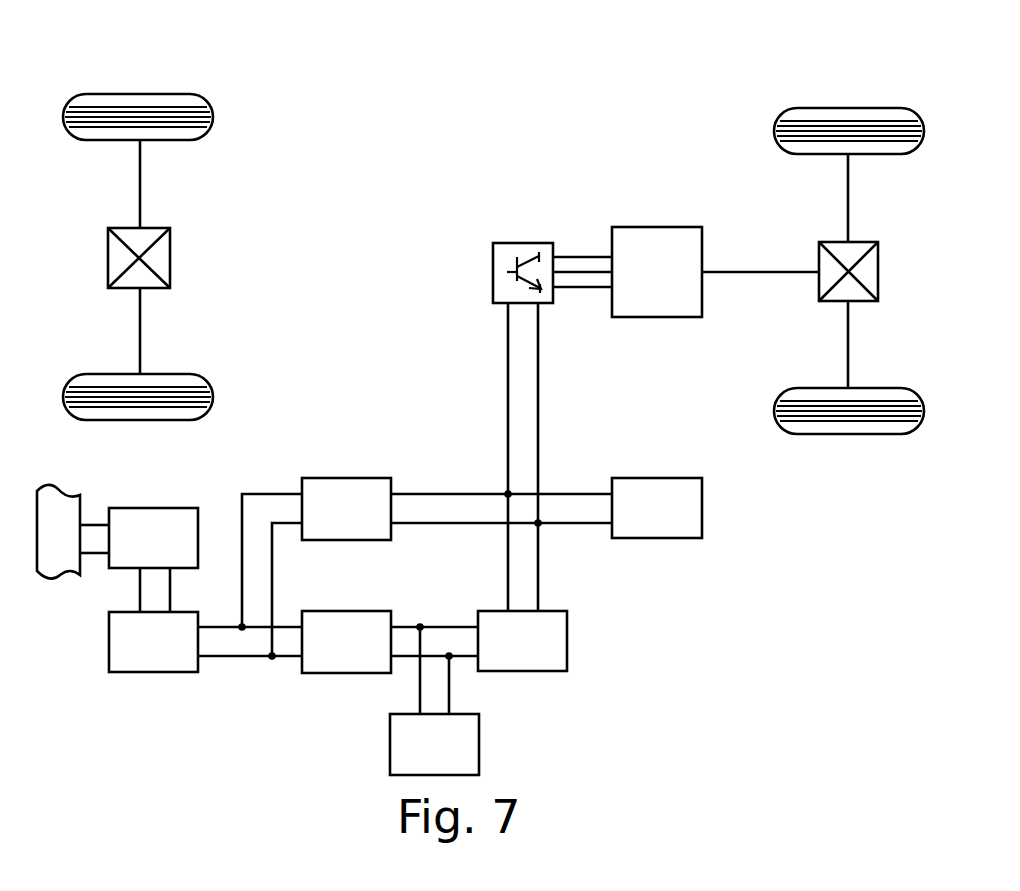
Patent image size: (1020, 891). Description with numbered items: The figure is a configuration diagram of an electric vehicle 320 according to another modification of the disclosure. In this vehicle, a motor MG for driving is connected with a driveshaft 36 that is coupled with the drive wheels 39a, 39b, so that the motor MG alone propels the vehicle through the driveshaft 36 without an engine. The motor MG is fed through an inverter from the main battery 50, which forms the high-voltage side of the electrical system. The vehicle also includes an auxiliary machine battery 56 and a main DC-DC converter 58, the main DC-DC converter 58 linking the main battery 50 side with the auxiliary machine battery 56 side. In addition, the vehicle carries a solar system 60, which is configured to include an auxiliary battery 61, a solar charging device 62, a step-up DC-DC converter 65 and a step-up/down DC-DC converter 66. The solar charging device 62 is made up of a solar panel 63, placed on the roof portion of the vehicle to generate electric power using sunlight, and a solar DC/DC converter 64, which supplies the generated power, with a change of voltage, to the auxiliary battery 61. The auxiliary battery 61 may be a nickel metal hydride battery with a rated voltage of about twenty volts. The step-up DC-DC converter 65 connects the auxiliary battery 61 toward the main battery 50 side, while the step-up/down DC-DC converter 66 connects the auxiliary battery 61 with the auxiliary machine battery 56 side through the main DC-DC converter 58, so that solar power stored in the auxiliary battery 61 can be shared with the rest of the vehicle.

The electric vehicle 320 is at (663, 80).
The drive wheel 39a is at (849, 108).
The drive wheel 39b is at (848, 434).
The driveshaft 36 is at (789, 271).
The motor MG is at (657, 227).
The main battery 50 is at (663, 478).
The main DC-DC converter 58 is at (567, 650).
The auxiliary machine battery 56 is at (479, 748).
The solar system 60 is at (316, 418).
The step-up DC-DC converter 65 is at (355, 478).
The step-up/down DC-DC converter 66 is at (355, 611).
The solar charging device 62 is at (214, 494).
The solar panel 63 is at (60, 492).
The solar DC/DC converter 64 is at (163, 508).
The auxiliary battery 61 is at (109, 640).